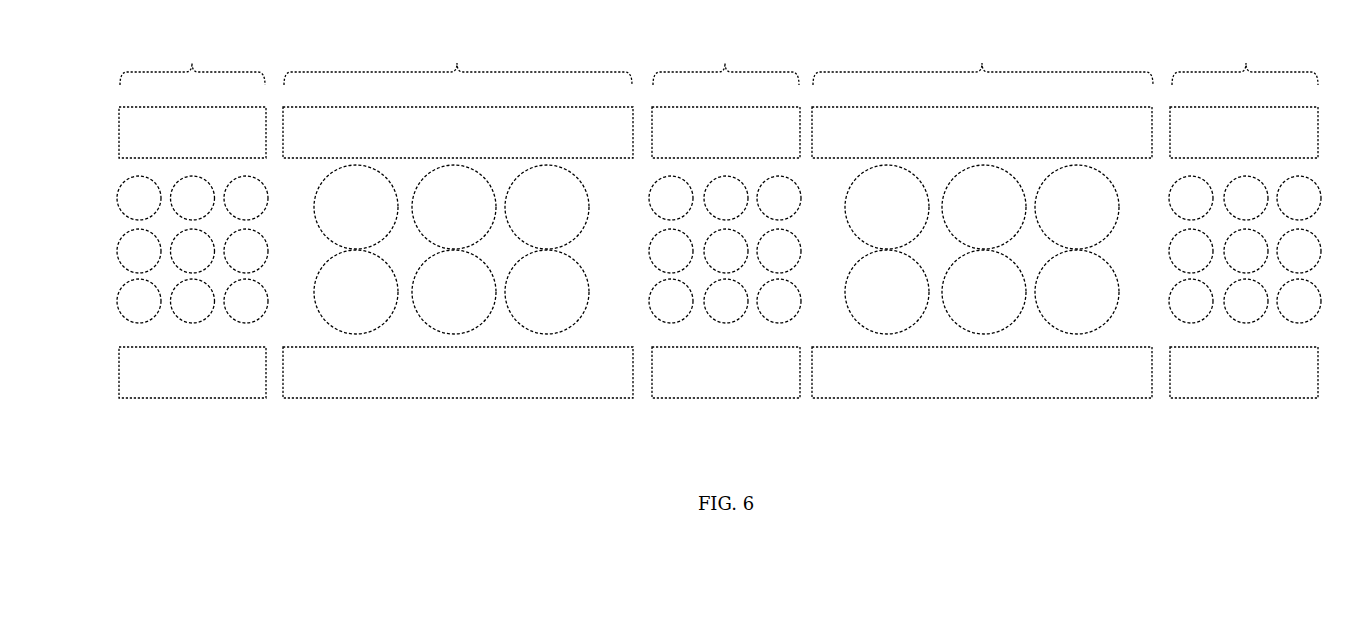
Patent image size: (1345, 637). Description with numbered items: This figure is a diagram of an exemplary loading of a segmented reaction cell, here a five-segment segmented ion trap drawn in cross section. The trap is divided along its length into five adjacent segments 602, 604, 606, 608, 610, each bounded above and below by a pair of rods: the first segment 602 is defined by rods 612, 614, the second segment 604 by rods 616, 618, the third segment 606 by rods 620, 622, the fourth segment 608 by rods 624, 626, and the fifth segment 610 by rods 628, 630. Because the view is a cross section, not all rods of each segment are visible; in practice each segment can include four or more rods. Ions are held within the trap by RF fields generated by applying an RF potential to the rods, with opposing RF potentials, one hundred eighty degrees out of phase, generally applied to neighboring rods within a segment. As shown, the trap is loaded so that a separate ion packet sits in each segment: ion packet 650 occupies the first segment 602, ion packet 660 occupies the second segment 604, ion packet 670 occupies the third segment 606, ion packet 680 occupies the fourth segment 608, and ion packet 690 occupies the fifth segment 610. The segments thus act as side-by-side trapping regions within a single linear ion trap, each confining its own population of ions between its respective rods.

The segment 602 is at (192, 62).
The segment 604 is at (458, 62).
The segment 606 is at (726, 62).
The segment 608 is at (983, 62).
The segment 610 is at (1245, 62).
The rod 612 is at (175, 142).
The rod 614 is at (175, 382).
The rod 616 is at (440, 142).
The rod 618 is at (440, 382).
The rod 620 is at (708, 142).
The rod 622 is at (708, 382).
The rod 624 is at (965, 142).
The rod 626 is at (965, 382).
The rod 628 is at (1229, 142).
The rod 630 is at (1229, 382).
The ion packet 650 is at (163, 218).
The ion packet 660 is at (405, 322).
The ion packet 670 is at (697, 323).
The ion packet 680 is at (930, 323).
The ion packet 690 is at (1217, 323).